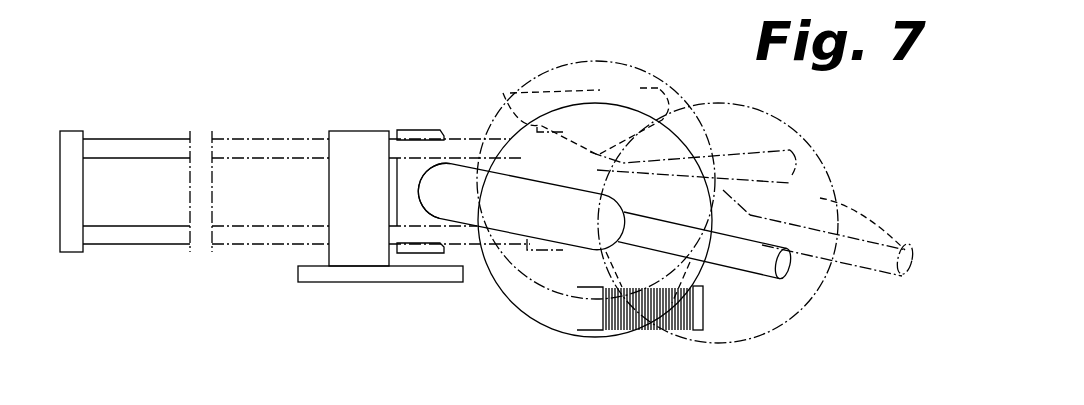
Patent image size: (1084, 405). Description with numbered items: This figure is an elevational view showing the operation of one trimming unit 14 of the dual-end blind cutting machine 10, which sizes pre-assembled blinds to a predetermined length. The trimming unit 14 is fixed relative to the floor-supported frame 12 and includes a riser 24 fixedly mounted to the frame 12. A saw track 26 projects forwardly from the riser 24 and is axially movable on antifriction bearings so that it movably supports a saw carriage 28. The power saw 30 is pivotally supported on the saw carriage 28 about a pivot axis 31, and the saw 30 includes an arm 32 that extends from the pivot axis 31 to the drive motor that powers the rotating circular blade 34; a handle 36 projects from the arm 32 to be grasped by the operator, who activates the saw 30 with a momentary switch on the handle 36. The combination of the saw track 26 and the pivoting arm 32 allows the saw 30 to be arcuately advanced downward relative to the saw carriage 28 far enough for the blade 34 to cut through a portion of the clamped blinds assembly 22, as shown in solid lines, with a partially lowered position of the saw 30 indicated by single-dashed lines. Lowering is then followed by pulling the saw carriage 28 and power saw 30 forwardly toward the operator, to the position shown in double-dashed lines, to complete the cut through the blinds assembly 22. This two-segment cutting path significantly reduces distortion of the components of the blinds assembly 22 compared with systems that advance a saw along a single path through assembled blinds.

The cutting machine 10 is at (672, 40).
The frame 12 is at (356, 294).
The trimming unit 14 is at (429, 174).
The blinds assembly 22 is at (703, 303).
The riser 24 is at (375, 211).
The saw track 26 is at (138, 138).
The saw carriage 28 is at (433, 130).
The power saw 30 is at (472, 272).
The pivot axis 31 is at (446, 191).
The arm 32 is at (552, 226).
The circular blade 34 is at (590, 103).
The handle 36 is at (788, 248).